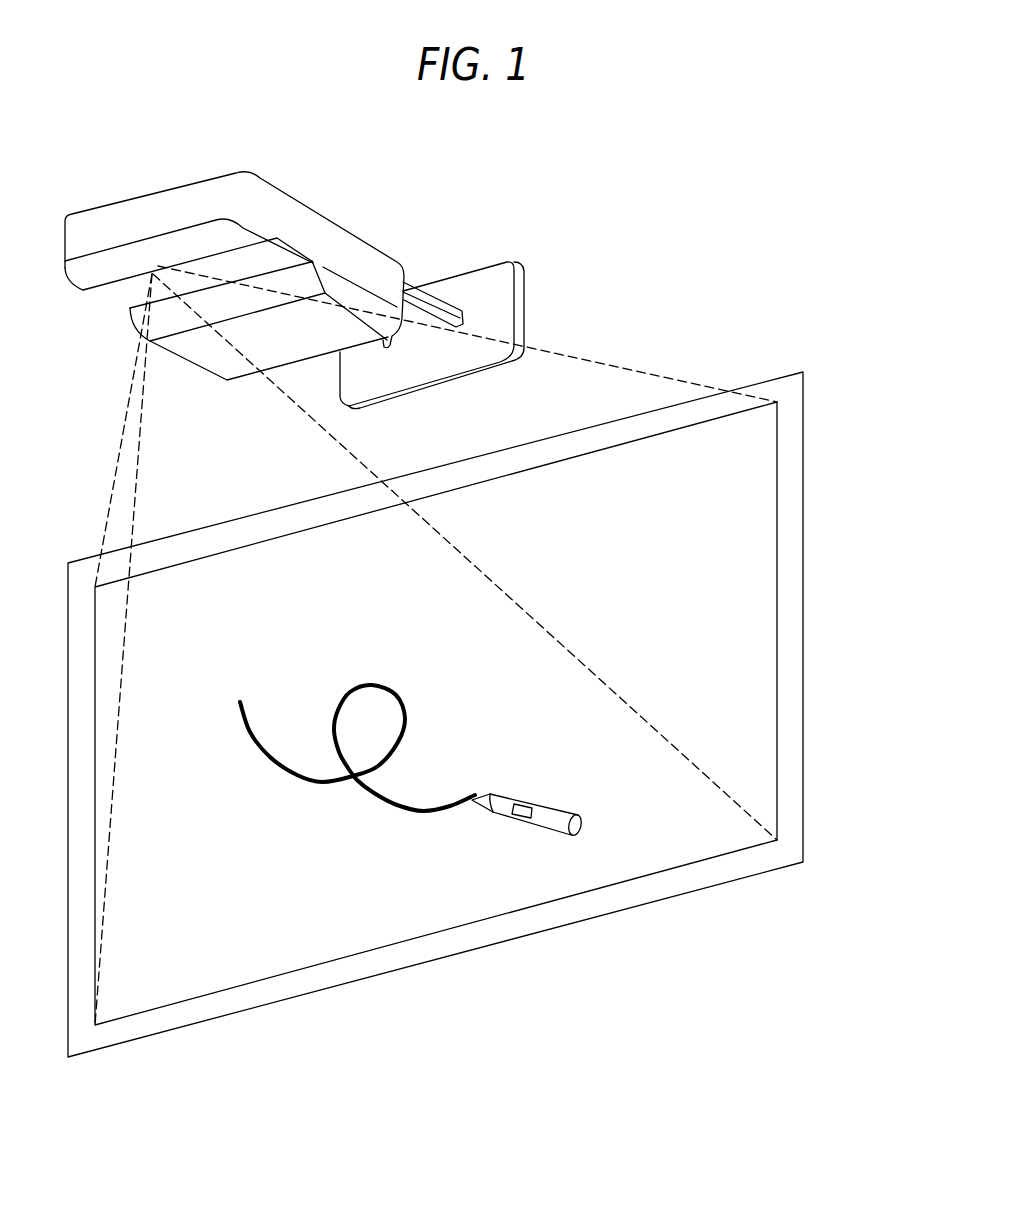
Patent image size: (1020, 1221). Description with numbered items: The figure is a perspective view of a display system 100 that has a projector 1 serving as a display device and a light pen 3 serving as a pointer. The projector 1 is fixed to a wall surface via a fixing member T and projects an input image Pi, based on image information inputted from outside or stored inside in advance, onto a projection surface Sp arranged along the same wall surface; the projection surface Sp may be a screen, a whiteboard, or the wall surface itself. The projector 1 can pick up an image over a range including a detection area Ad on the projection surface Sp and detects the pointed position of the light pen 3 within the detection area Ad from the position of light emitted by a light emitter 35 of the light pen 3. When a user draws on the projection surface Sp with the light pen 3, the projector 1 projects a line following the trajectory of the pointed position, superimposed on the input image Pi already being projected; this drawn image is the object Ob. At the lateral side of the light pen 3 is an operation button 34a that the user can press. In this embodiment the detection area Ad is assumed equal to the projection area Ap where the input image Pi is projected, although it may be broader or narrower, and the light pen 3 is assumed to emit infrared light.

The display system 100 is at (688, 123).
The projector 1 is at (152, 205).
The fixing member T is at (440, 292).
The projection surface Sp is at (787, 393).
The detection area Ad is at (762, 503).
The input image Pi is at (762, 662).
The projection area Ap is at (487, 713).
The object Ob is at (288, 774).
The light pen 3 is at (561, 817).
The light emitter 35 is at (475, 790).
The operation button 34a is at (518, 820).